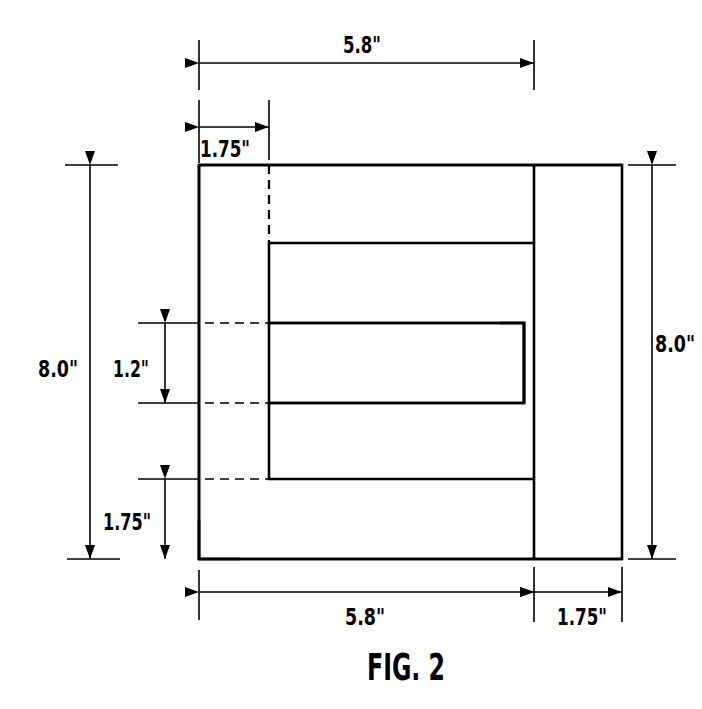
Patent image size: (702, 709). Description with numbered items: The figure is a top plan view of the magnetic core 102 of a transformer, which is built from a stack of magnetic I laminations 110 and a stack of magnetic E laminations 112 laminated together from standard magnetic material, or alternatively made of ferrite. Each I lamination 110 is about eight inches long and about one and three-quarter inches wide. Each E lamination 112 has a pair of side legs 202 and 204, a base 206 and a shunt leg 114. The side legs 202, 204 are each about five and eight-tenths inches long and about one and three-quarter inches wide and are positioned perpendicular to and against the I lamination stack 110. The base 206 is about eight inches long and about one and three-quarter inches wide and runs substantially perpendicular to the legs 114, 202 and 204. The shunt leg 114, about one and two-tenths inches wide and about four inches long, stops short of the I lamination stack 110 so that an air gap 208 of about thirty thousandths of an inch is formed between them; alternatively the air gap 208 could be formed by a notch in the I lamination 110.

The magnetic core 102 is at (345, 127).
The I lamination stack 110 is at (578, 164).
The E lamination stack 112 is at (222, 548).
The shunt leg 114 is at (388, 404).
The side leg 202 is at (471, 163).
The side leg 204 is at (440, 561).
The base 206 is at (199, 229).
The air gap 208 is at (527, 322).